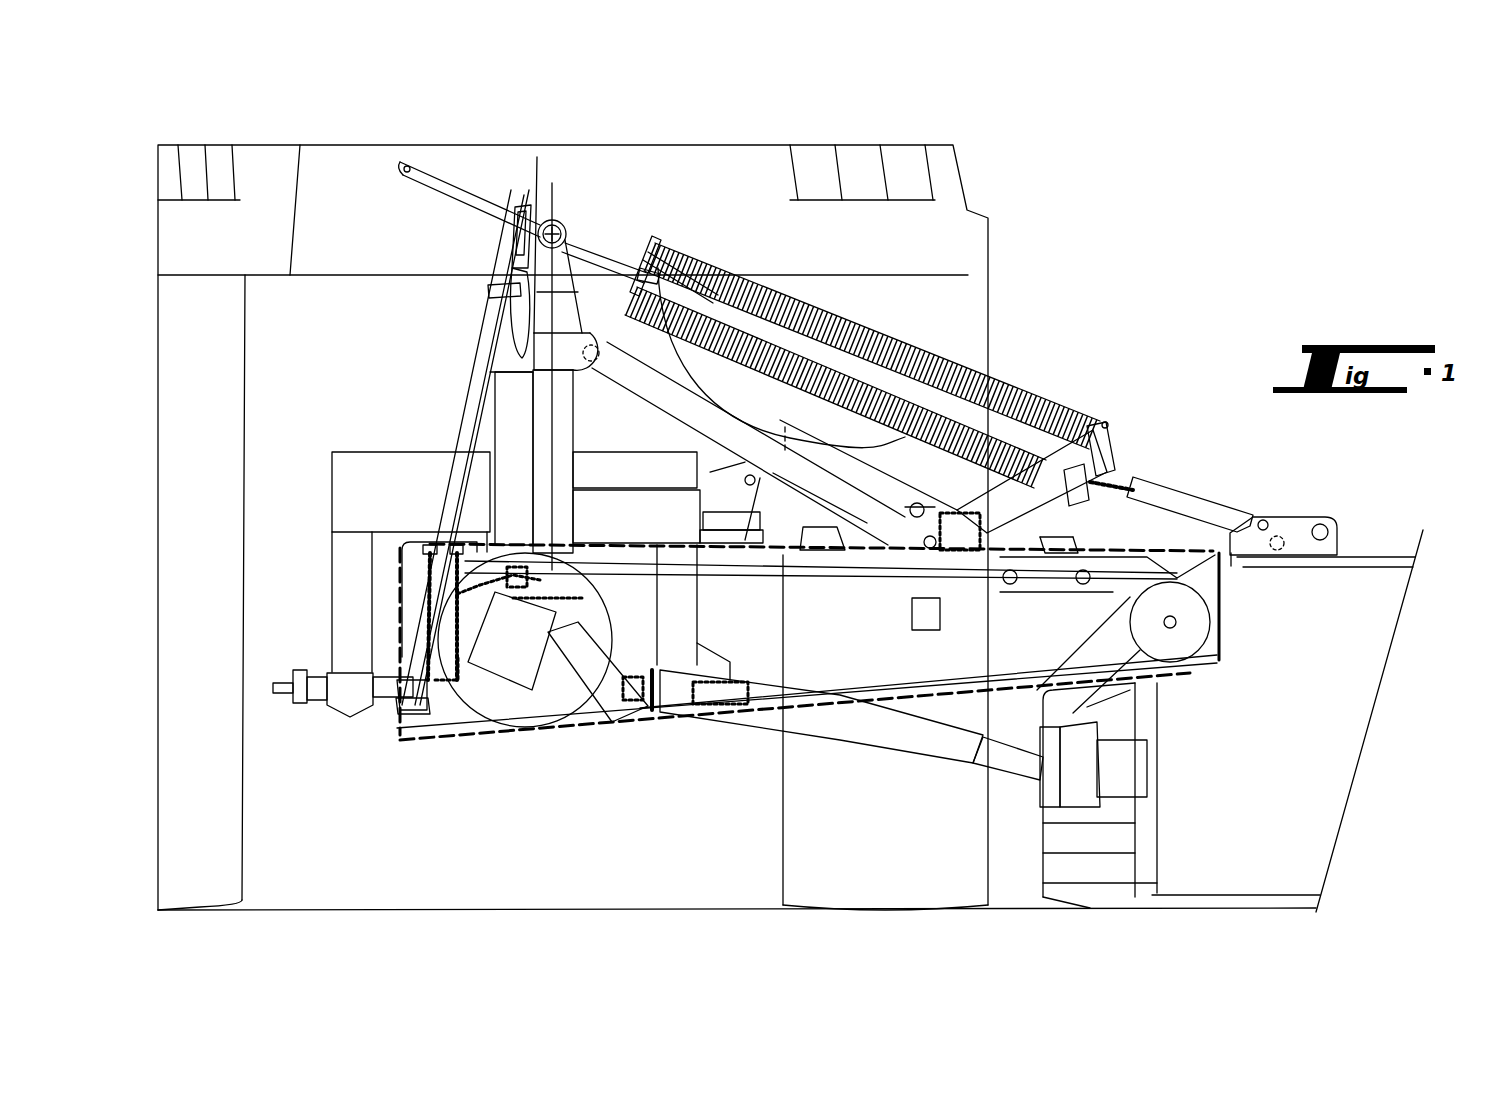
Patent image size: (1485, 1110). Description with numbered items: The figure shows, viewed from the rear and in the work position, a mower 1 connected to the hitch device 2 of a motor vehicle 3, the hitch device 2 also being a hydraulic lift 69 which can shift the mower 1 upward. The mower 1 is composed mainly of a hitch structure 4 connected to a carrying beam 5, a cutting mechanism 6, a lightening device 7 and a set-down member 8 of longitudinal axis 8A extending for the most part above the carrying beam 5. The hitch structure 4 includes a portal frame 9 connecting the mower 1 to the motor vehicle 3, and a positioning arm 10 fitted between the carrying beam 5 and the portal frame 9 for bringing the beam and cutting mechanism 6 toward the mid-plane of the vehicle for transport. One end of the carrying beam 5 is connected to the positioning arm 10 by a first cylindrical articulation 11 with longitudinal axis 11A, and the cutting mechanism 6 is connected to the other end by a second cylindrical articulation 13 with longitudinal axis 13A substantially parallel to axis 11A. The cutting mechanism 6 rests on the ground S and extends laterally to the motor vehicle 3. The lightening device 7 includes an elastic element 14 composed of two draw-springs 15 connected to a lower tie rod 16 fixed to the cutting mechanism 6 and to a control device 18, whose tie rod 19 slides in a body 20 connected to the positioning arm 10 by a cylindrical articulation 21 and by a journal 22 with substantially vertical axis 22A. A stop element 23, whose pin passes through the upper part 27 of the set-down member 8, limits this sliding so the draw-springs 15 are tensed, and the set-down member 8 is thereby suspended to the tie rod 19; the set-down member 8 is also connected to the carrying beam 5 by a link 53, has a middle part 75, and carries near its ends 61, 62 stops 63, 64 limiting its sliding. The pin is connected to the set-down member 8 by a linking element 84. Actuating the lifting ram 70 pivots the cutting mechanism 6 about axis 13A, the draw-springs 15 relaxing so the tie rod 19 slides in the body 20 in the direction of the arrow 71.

The mower 1 is at (1280, 257).
The hitch device 2 is at (307, 662).
The motor vehicle 3 is at (723, 150).
The hitch structure 4 is at (330, 460).
The carrying beam 5 is at (865, 595).
The cutting mechanism 6 is at (1320, 897).
The lightening device 7 is at (1073, 302).
The set-down member 8 is at (470, 385).
The longitudinal axis 8A is at (520, 158).
The portal frame 9 is at (330, 510).
The positioning arm 10 is at (563, 437).
The first cylindrical articulation 11 is at (508, 560).
The longitudinal axis 11A is at (527, 597).
The second cylindrical articulation 13 is at (1172, 628).
The longitudinal axis 13A is at (1208, 657).
The elastic element 14 is at (910, 340).
The draw-springs 15 is at (1005, 435).
The lower tie rod 16 is at (1175, 492).
The control device 18 is at (565, 140).
The tie rod 19 is at (427, 183).
The body 20 is at (570, 233).
The cylindrical articulation 21 is at (563, 212).
The journal 22 is at (572, 295).
The longitudinal axis 22A is at (550, 477).
The stop element 23 is at (500, 260).
The upper part 27 is at (482, 240).
The link 53 is at (423, 547).
The end 61 is at (403, 712).
The end 62 is at (513, 200).
The stop 63 is at (420, 713).
The stop 64 is at (482, 297).
The hydraulic lift 69 is at (262, 648).
The lifting ram 70 is at (757, 387).
The arrow 71 is at (462, 127).
The middle part 75 is at (440, 428).
The linking element 84 is at (497, 348).
The ground S is at (478, 912).